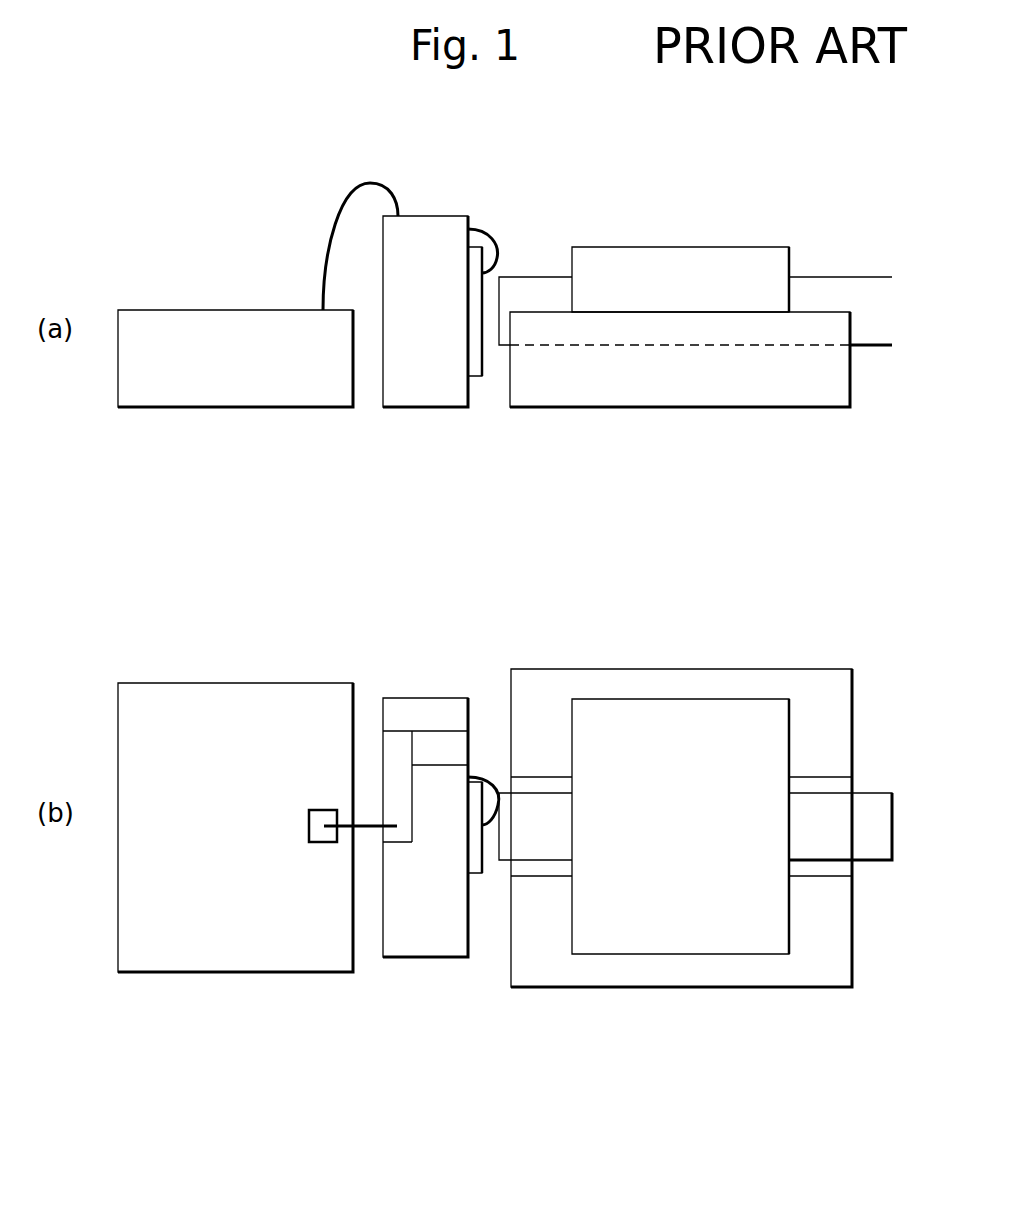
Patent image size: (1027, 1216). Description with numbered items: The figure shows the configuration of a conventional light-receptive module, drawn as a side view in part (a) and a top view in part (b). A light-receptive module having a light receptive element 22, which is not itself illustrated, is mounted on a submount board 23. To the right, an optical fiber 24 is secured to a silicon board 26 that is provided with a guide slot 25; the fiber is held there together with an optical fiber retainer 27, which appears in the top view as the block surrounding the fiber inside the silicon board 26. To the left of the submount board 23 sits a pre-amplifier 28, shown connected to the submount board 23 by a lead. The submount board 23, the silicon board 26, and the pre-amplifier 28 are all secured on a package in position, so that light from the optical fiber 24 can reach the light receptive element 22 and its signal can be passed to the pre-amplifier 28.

The light receptive element 22 is at (482, 378).
The submount board 23 is at (445, 225).
The optical fiber 24 is at (852, 277).
The guide slot 25 is at (538, 777).
The silicon board 26 is at (625, 390).
The optical fiber retainer 27 is at (687, 715).
The pre-amplifier 28 is at (158, 320).